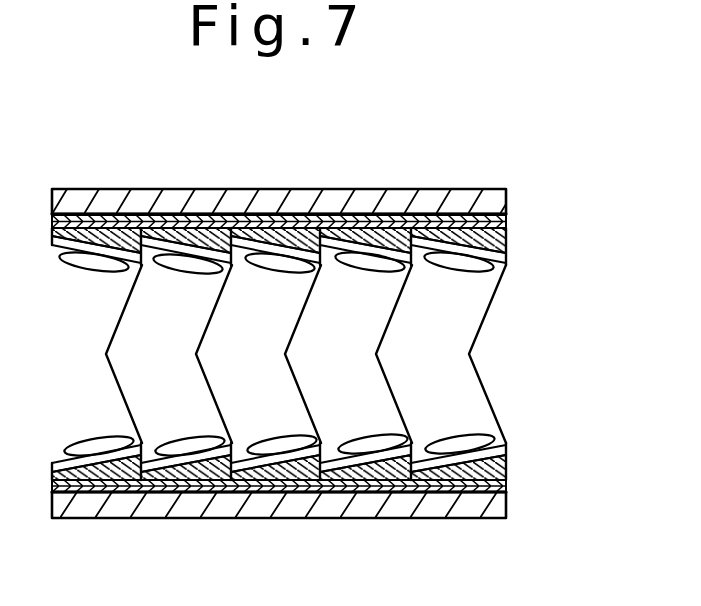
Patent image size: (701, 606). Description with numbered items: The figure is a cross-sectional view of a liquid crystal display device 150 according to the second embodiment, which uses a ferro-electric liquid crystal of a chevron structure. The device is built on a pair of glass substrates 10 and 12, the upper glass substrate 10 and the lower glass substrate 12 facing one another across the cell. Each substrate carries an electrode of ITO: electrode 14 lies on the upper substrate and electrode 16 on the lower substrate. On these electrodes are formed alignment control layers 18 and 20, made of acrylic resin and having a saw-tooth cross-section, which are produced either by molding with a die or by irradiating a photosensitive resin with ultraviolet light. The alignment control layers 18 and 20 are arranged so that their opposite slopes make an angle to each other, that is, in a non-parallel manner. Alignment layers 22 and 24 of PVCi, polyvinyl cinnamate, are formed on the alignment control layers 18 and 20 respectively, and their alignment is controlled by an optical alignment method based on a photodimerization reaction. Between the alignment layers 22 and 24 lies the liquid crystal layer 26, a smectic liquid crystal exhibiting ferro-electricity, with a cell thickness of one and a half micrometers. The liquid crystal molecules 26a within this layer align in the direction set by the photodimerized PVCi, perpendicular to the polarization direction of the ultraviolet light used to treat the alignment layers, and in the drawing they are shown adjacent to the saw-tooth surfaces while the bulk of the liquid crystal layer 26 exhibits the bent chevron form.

The liquid crystal display device 150 is at (357, 163).
The glass substrate 10 is at (507, 192).
The glass substrate 12 is at (508, 508).
The electrode 14 is at (507, 216).
The electrode 16 is at (508, 487).
The alignment control layer 18 is at (507, 237).
The alignment control layer 20 is at (508, 470).
The alignment layer 22 is at (507, 255).
The alignment layer 24 is at (507, 447).
The liquid crystal layer 26 is at (452, 330).
The liquid crystal molecules 26a is at (465, 418).